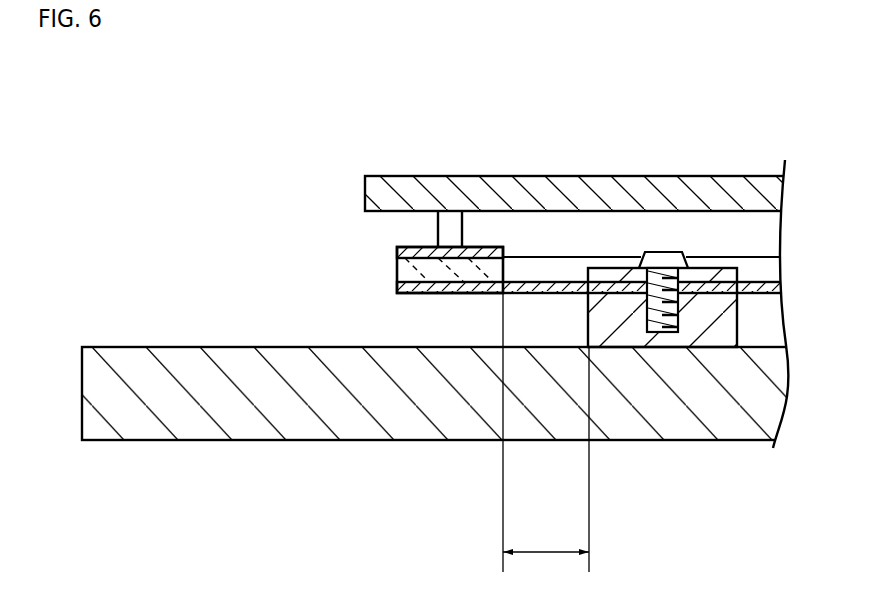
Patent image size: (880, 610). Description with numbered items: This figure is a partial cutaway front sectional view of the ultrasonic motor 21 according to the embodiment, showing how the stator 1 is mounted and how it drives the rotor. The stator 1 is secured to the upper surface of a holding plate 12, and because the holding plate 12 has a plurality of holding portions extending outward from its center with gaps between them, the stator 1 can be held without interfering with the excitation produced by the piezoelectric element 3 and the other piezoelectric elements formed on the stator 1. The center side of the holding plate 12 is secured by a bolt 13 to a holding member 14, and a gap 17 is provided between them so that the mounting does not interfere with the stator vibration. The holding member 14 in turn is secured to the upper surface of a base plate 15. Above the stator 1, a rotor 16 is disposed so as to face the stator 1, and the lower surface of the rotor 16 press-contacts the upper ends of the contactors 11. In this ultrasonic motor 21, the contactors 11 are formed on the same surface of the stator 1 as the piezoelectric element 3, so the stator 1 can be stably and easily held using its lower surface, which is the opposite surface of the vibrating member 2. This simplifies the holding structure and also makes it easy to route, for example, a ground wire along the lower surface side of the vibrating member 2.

The stator 1 is at (407, 277).
The vibrating member 2 is at (457, 270).
The piezoelectric element 3 is at (490, 247).
The contactor 11 is at (467, 228).
The holding plate 12 is at (548, 293).
The bolt 13 is at (663, 332).
The holding member 14 is at (587, 335).
The base plate 15 is at (432, 440).
The rotor 16 is at (603, 176).
The gap 17 is at (546, 439).
The ultrasonic motor 21 is at (345, 153).